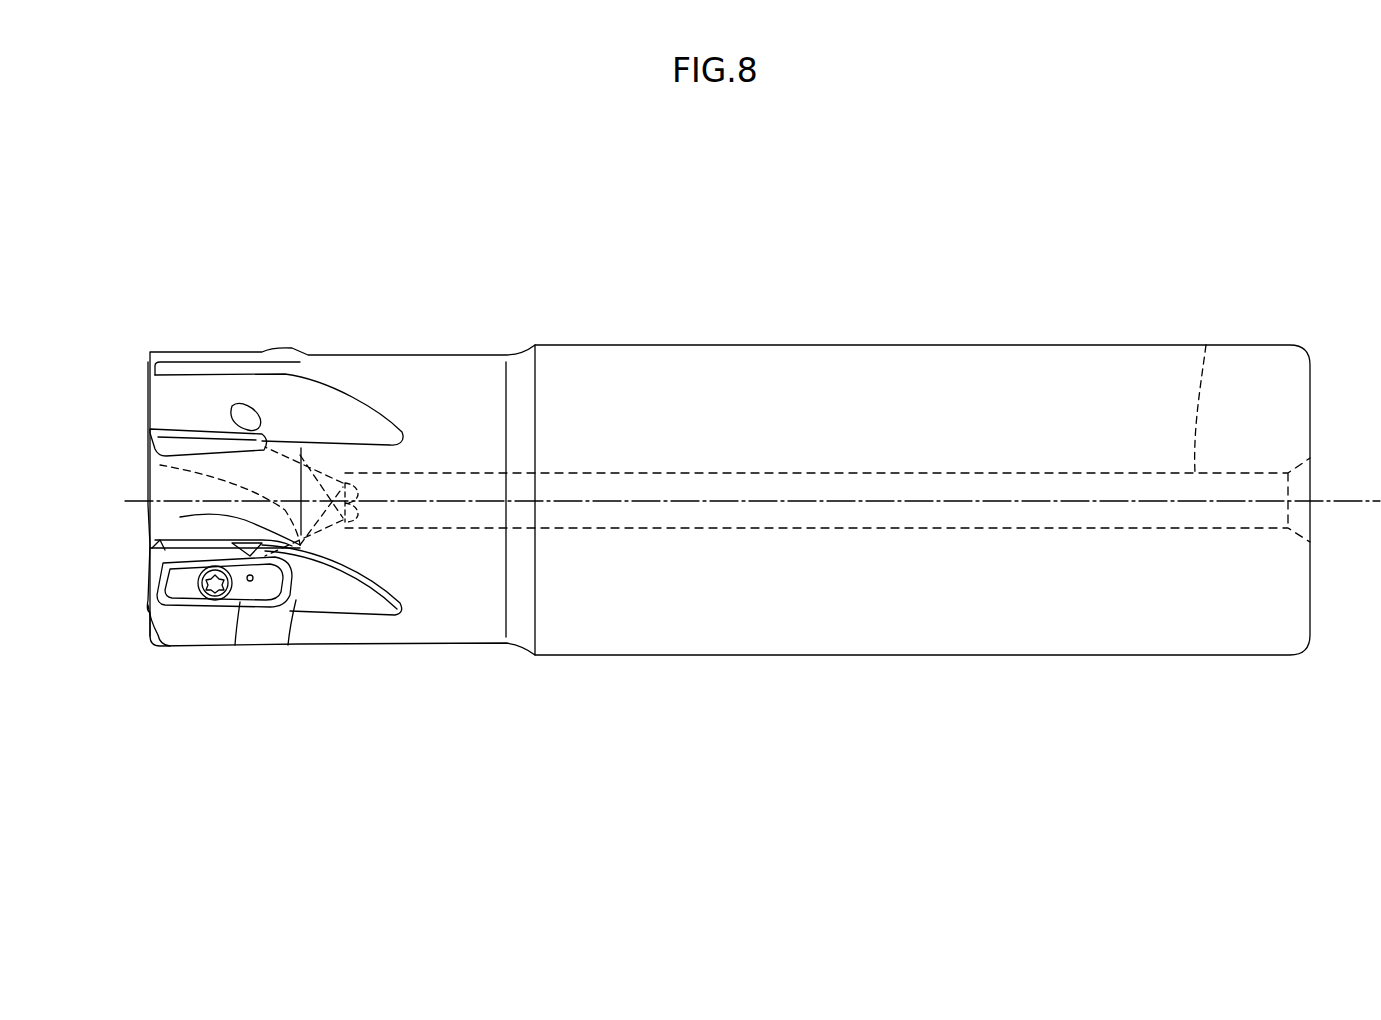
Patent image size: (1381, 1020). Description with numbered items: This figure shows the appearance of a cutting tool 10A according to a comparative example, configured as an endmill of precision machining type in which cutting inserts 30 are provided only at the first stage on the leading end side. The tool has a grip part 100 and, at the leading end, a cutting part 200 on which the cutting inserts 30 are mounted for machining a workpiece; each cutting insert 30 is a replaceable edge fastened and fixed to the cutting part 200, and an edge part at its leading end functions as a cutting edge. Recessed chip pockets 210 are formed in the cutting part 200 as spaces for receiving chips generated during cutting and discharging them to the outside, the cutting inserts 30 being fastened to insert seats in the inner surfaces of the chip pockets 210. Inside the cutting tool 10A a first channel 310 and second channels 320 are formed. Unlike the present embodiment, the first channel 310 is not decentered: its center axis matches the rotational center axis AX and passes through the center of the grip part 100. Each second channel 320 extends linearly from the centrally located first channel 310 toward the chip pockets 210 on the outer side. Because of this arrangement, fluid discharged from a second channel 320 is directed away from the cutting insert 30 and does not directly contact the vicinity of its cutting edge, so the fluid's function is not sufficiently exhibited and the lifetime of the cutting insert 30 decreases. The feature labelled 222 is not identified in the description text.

The cutting tool 10A is at (1168, 190).
The grip part 100 is at (965, 317).
The first channel 310 is at (1206, 345).
The rotational center axis AX is at (1357, 500).
The cutting part 200 is at (284, 318).
The chip pocket 210 is at (218, 400).
The cutting insert 30 is at (175, 352).
The second channel 320 is at (318, 468).
The seating surface 222 is at (180, 517).